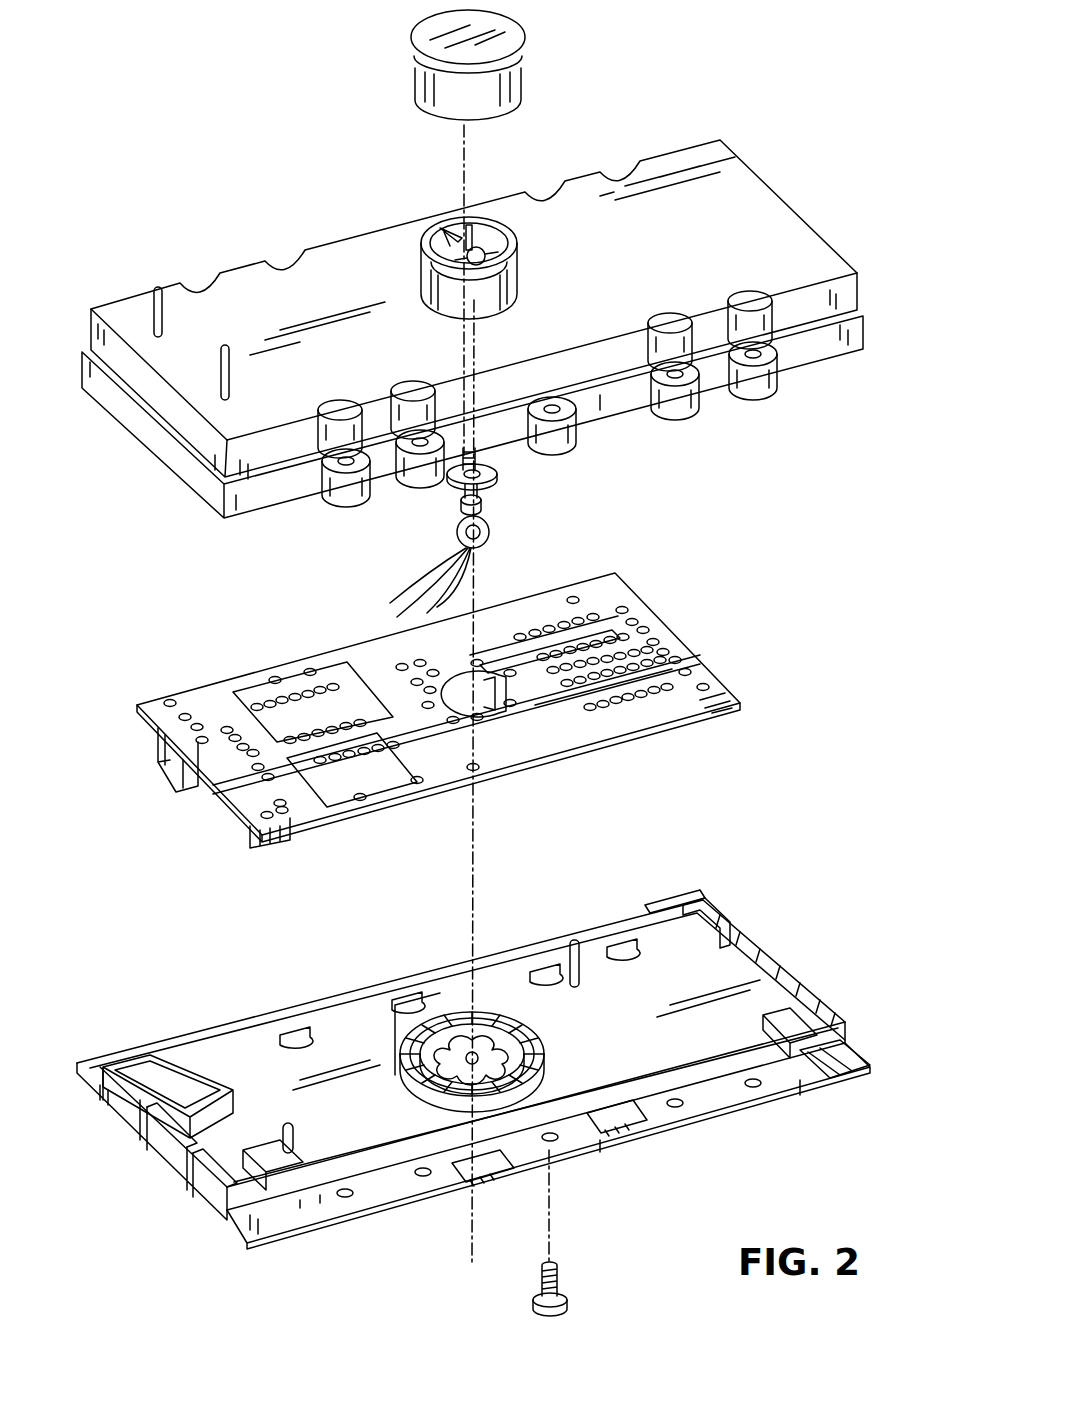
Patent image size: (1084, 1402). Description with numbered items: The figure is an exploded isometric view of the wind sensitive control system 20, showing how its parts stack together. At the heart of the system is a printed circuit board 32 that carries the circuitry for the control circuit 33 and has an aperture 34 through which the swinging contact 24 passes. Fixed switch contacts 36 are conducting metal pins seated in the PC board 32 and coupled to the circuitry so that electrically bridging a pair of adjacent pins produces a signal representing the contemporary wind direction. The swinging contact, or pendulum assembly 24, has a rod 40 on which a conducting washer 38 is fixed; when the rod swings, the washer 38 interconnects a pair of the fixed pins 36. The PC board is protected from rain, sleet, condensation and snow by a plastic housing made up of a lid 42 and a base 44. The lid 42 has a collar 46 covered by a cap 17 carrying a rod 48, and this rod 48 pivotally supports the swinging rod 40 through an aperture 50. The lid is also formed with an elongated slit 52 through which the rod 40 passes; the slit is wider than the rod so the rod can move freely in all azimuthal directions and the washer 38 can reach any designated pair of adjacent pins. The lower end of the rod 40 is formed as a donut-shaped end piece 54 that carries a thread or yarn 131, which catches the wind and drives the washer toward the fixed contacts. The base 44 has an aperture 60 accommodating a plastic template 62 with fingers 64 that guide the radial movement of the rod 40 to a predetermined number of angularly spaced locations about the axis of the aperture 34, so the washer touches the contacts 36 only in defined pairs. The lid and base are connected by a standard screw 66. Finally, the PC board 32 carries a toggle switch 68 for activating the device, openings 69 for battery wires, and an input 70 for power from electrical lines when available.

The knob cap 17 is at (527, 34).
The wind sensitive control system 20 is at (648, 80).
The swinging contact 24 is at (503, 510).
The printed circuit board 32 is at (723, 700).
The control circuit 33 is at (412, 678).
The aperture 34 is at (461, 688).
The fixed switch contacts 36 is at (481, 720).
The conducting washer 38 is at (498, 475).
The rod 40 is at (457, 502).
The lid 42 is at (763, 211).
The base 44 is at (780, 950).
The collar 46 is at (518, 238).
The rod 48 is at (455, 232).
The aperture 50 is at (468, 226).
The elongated slit 52 is at (492, 259).
The donut-shaped end piece 54 is at (489, 538).
The aperture 60 is at (407, 1075).
The plastic template 62 is at (518, 1042).
The fingers 64 is at (541, 1062).
The screw 66 is at (560, 1270).
The toggle switch 68 is at (186, 792).
The openings 69 is at (657, 912).
The input 70 is at (275, 851).
The thread or yarn 131 is at (416, 576).